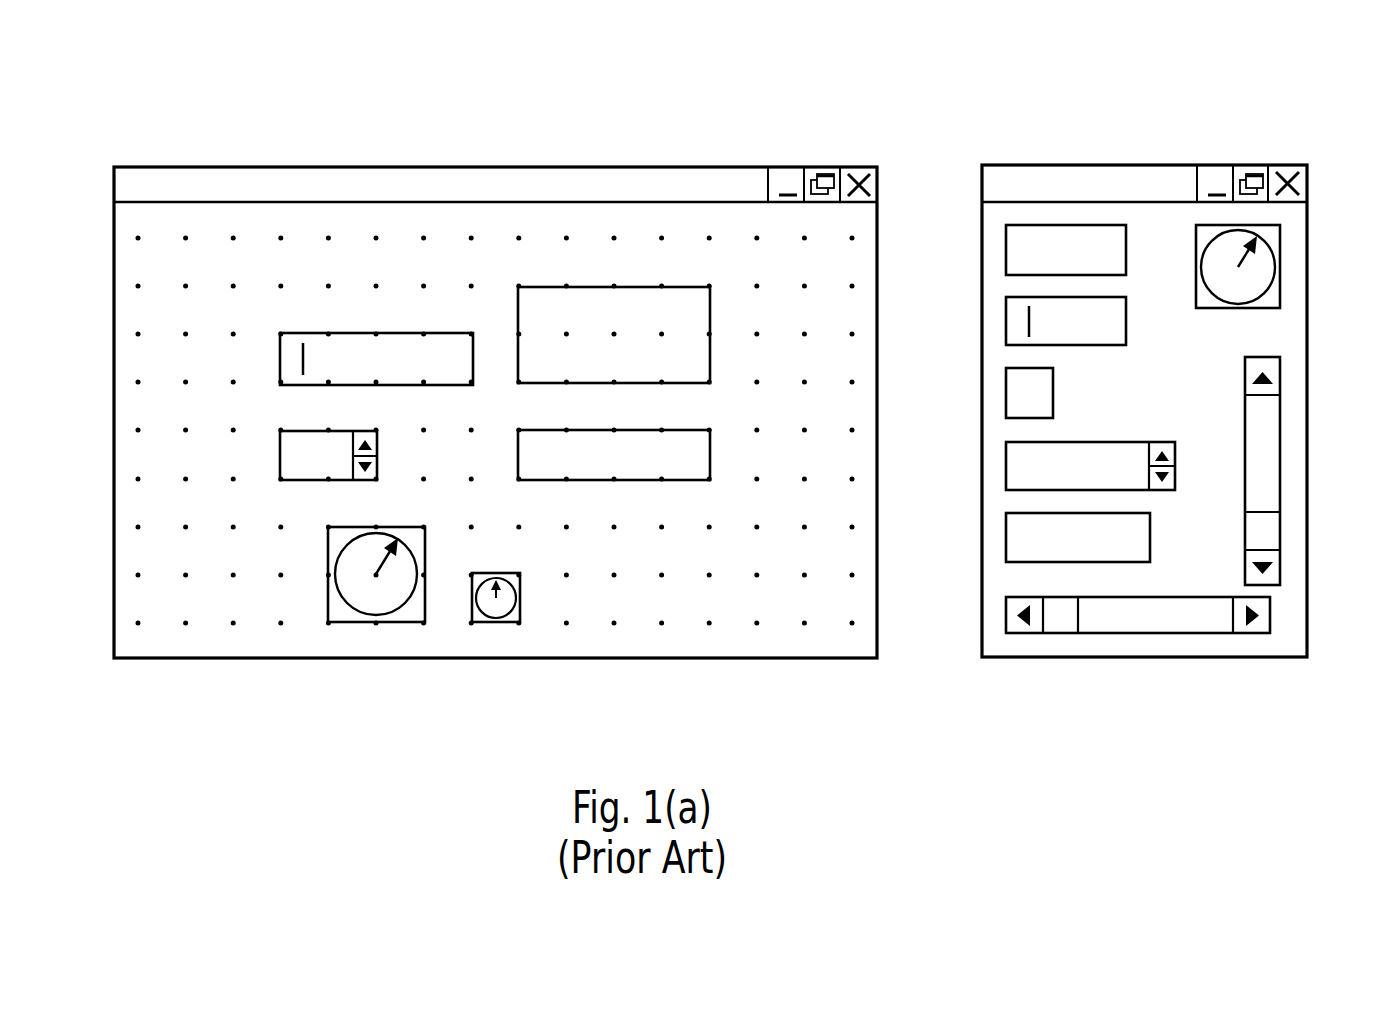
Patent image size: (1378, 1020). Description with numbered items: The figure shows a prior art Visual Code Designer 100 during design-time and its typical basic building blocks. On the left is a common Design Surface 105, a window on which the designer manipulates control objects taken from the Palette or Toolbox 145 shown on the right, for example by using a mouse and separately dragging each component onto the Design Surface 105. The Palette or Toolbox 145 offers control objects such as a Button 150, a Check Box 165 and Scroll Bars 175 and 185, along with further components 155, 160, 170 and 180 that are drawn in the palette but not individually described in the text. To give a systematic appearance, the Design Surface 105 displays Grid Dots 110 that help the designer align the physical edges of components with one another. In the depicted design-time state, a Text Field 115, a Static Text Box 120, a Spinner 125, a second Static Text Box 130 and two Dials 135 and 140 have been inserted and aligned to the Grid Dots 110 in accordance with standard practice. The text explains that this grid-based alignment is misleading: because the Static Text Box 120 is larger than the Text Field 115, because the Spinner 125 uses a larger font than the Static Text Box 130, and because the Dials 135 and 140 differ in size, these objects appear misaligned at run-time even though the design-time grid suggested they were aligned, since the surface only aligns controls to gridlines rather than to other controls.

The Visual Code Designer 100 is at (185, 120).
The Design Surface 105 is at (538, 167).
The Grid Dots 110 is at (136, 334).
The Text Field 115 is at (400, 333).
The Static Text Box 120 is at (640, 287).
The Spinner 125 is at (377, 470).
The Static Text Box 130 is at (710, 470).
The Dial 135 is at (425, 562).
The Dial 140 is at (520, 615).
The Palette or Toolbox 145 is at (1141, 165).
The Button 150 is at (1004, 246).
The dial component 155 is at (1280, 277).
The text field component 160 is at (1004, 319).
The Check Box 165 is at (1004, 395).
The combo box component 170 is at (1004, 462).
The Scroll Bar 175 is at (1283, 472).
The static text component 180 is at (1004, 536).
The Scroll Bar 185 is at (1135, 634).